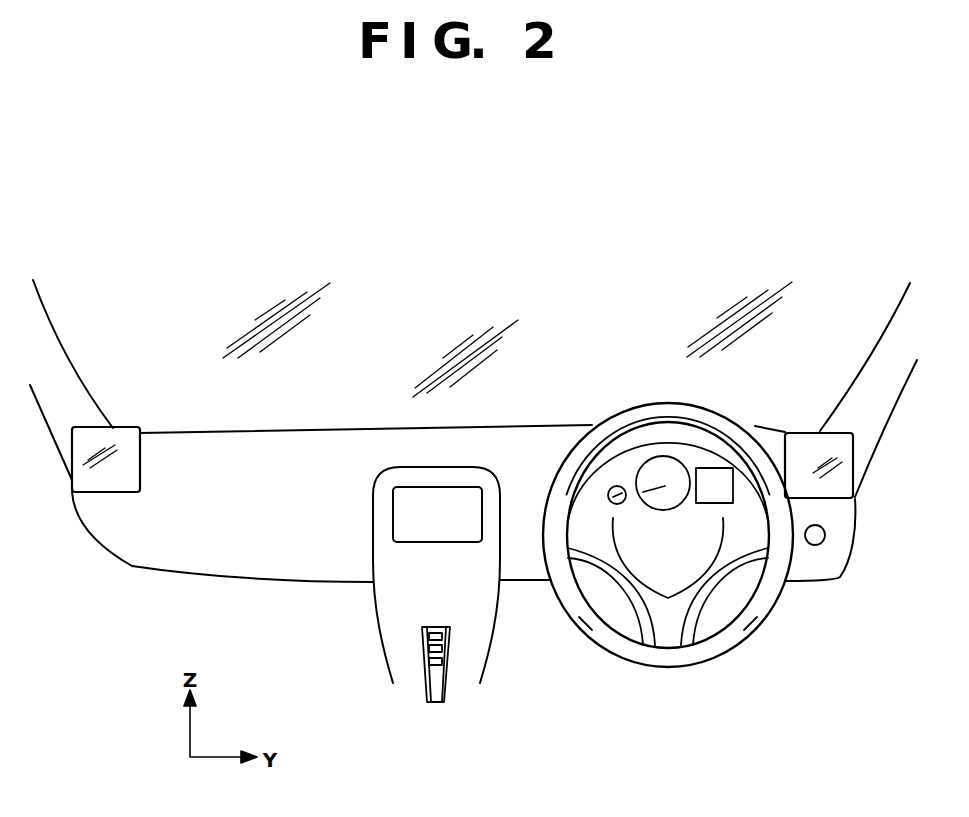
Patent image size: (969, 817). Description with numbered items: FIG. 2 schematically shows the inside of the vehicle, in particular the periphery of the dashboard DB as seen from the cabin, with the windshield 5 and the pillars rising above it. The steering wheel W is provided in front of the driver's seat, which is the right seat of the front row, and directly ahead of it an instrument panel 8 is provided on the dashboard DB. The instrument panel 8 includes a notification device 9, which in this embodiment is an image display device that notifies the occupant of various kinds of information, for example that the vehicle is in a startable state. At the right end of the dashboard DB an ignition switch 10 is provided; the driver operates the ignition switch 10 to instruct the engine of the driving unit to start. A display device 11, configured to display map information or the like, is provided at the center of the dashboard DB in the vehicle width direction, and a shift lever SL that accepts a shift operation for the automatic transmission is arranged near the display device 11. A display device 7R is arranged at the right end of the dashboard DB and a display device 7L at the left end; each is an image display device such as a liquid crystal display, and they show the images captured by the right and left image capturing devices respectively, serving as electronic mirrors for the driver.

The windshield 5 is at (233, 417).
The dashboard DB is at (132, 566).
The display device 7L is at (120, 433).
The display device 7R is at (810, 447).
The instrument panel 8 is at (620, 466).
The notification device 9 is at (709, 467).
The ignition switch 10 is at (817, 545).
The display device 11 is at (393, 518).
The steering wheel W is at (752, 632).
The shift lever SL is at (448, 685).